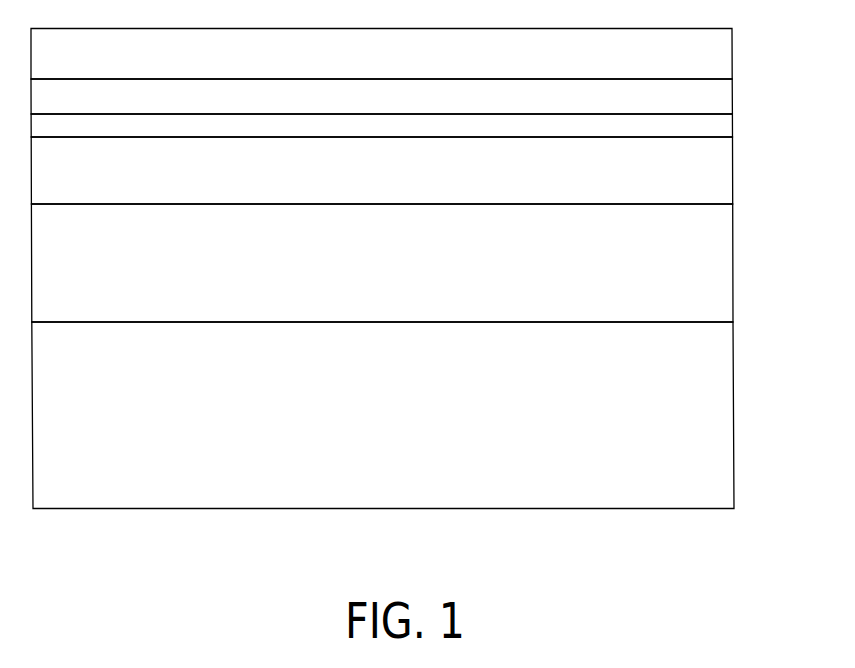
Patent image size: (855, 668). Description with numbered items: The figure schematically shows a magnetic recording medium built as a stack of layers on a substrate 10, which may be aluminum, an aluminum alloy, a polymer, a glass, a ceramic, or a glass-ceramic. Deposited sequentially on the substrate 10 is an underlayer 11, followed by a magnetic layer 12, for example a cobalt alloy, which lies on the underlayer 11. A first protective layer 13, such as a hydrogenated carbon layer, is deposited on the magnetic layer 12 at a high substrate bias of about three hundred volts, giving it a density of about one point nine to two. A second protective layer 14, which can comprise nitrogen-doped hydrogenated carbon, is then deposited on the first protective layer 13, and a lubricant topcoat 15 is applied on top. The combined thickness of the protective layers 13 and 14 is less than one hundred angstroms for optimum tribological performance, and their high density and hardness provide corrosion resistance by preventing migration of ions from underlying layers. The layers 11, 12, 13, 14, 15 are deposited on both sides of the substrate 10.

The substrate 10 is at (734, 413).
The underlayer 11 is at (733, 258).
The magnetic layer 12 is at (732, 177).
The first protective layer 13 is at (732, 123).
The second protective layer 14 is at (732, 95).
The lubricant topcoat 15 is at (732, 40).